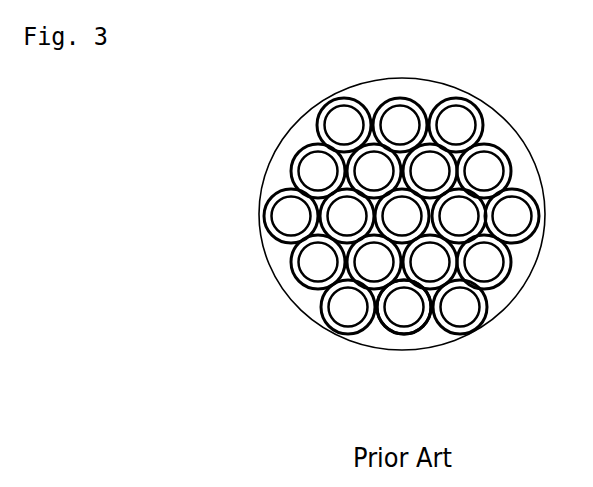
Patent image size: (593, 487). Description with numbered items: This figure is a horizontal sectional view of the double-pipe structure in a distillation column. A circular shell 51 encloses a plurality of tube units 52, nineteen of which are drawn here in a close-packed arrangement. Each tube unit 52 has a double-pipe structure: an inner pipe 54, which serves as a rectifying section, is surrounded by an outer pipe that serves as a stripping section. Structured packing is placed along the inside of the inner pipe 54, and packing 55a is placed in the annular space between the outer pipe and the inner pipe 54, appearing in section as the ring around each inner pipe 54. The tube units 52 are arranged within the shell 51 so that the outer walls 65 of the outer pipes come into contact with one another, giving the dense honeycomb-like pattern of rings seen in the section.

The shell 51 is at (517, 128).
The tube unit 52 is at (380, 108).
The inner pipe 54 is at (399, 118).
The packing 55a is at (463, 102).
The outer wall 65 is at (438, 221).